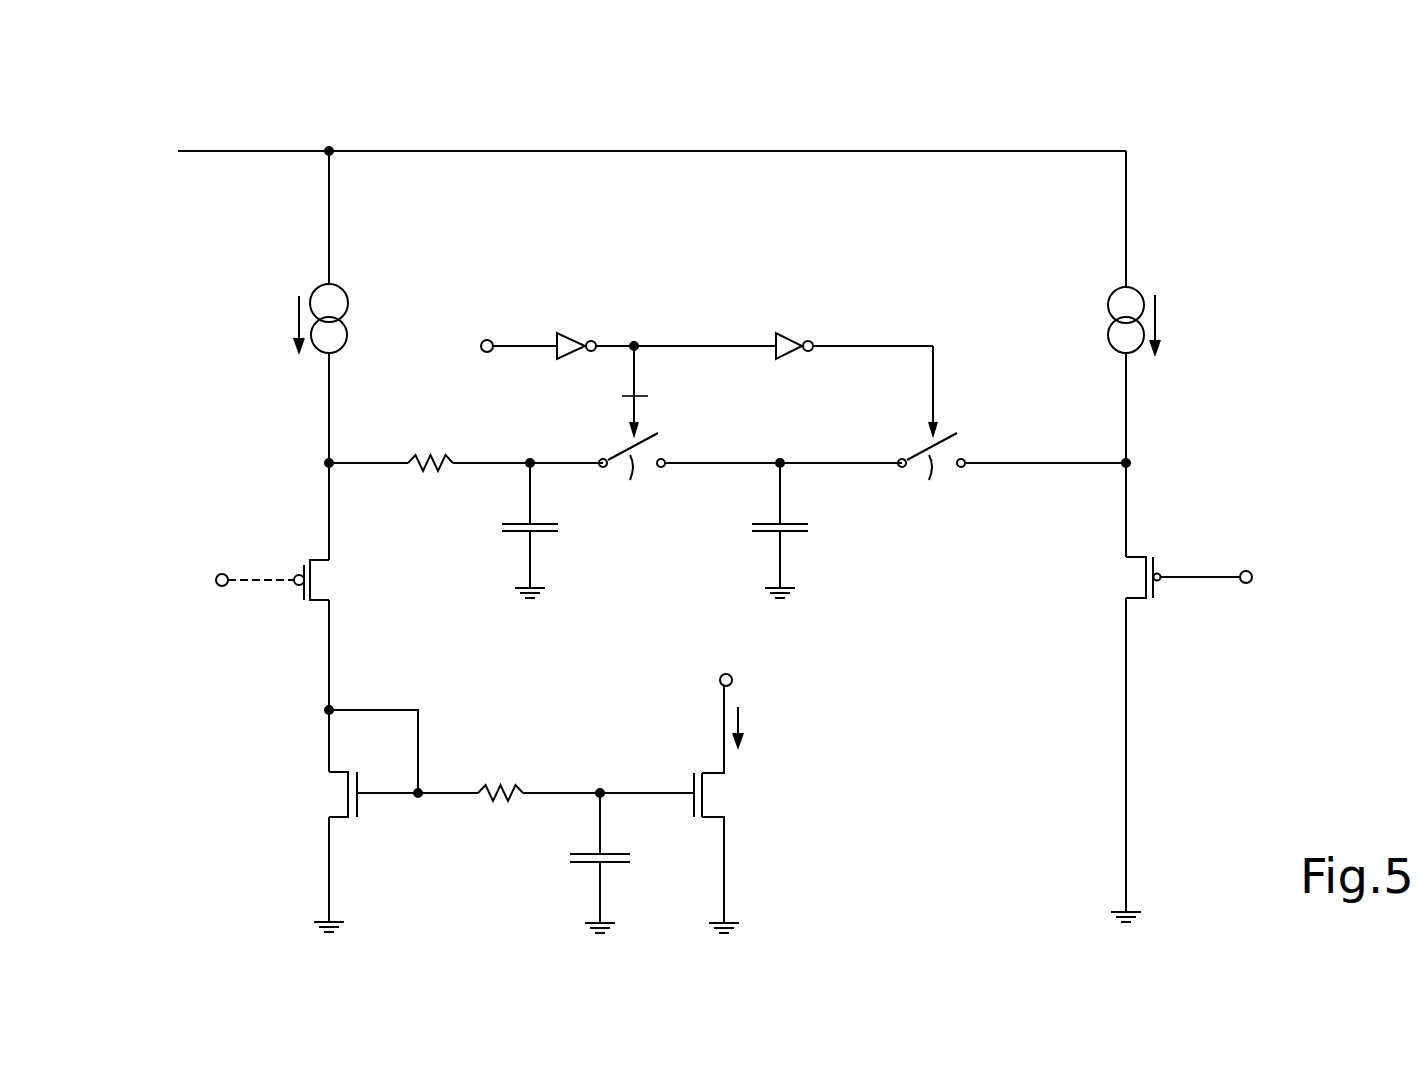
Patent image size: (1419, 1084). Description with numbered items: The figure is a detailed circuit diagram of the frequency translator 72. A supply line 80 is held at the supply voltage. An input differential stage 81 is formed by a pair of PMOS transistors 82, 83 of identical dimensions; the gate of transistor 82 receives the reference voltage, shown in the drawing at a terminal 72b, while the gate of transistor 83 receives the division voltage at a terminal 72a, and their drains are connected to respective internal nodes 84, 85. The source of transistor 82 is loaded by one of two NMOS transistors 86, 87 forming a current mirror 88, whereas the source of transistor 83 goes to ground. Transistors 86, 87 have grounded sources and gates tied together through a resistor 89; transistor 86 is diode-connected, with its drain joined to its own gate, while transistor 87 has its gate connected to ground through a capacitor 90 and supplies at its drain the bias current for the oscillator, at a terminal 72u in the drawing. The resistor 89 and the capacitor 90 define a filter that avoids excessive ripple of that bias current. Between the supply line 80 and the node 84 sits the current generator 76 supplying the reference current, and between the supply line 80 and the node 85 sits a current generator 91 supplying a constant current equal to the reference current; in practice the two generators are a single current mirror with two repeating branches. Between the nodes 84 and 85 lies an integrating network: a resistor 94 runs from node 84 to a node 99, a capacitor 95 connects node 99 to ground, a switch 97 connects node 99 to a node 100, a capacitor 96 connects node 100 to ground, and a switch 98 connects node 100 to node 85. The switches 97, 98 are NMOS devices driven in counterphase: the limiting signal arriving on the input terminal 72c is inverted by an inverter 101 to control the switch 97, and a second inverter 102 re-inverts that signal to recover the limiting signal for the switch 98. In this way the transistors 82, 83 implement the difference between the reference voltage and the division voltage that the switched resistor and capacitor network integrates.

The frequency translator 72 is at (1255, 308).
The output terminal VFF 72a is at (1245, 571).
The reference voltage input terminal VREF 72b is at (225, 574).
The input terminal 72c is at (489, 340).
The bias current input terminal IBIAS 72u is at (719, 681).
The current generator 76 is at (343, 338).
The supply line 80 is at (516, 151).
The input differential stage 81 is at (1147, 614).
The PMOS transistor 82 is at (318, 598).
The PMOS transistor 83 is at (1135, 558).
The internal node 84 is at (325, 465).
The internal node 85 is at (1130, 462).
The NMOS transistor 86 is at (342, 803).
The NMOS transistor 87 is at (715, 815).
The current mirror 88 is at (485, 836).
The resistor 89 is at (498, 788).
The capacitor 90 is at (585, 865).
The current generator 91 is at (1110, 314).
The resistor 94 is at (430, 458).
The capacitor 95 is at (512, 533).
The capacitor 96 is at (767, 533).
The switch 97 is at (632, 436).
The switch 98 is at (925, 432).
The node 99 is at (531, 458).
The node 100 is at (785, 458).
The inverter 101 is at (572, 340).
The inverter 102 is at (790, 340).